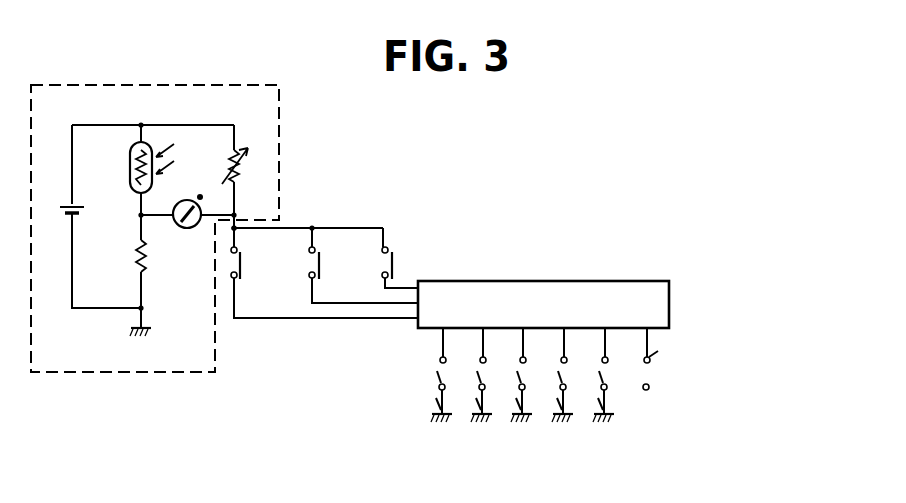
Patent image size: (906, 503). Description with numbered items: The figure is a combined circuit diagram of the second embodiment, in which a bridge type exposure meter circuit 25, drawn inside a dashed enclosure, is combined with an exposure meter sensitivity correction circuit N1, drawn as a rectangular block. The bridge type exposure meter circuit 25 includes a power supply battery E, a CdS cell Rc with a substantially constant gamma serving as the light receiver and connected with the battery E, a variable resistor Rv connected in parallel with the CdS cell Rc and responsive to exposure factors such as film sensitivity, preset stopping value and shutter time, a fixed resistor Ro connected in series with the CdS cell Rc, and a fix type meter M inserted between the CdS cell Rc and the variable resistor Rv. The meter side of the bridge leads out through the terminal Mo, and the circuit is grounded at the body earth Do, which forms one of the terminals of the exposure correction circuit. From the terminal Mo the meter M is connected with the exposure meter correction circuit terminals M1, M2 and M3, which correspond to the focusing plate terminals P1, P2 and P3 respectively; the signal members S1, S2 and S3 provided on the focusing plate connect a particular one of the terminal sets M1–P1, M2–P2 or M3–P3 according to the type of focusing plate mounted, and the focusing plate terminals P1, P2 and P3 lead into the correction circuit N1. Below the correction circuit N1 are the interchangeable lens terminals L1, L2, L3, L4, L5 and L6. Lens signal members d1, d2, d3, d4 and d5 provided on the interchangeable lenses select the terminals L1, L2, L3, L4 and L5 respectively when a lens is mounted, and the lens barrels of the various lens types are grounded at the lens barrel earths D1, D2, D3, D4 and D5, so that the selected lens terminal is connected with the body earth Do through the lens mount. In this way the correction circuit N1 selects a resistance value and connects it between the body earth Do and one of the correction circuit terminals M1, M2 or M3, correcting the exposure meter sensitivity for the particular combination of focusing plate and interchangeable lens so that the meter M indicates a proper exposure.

The bridge type exposure meter circuit 25 is at (279, 137).
The power supply battery E is at (85, 211).
The CdS cell Rc is at (130, 162).
The variable resistor Rv is at (228, 168).
The fixed resistor Ro is at (134, 256).
The fix type meter M is at (187, 228).
The meter terminal Mo is at (237, 227).
The body earth Do is at (152, 324).
The exposure meter correction circuit terminal M1 is at (237, 248).
The signal member S1 is at (241, 262).
The focusing plate terminal P1 is at (237, 278).
The exposure meter correction circuit terminal M2 is at (315, 248).
The signal member S2 is at (320, 262).
The focusing plate terminal P2 is at (315, 278).
The exposure meter correction circuit terminal M3 is at (388, 248).
The signal member S3 is at (393, 260).
The focusing plate terminal P3 is at (388, 278).
The exposure meter sensitivity correction circuit N1 is at (527, 281).
The interchangeable lens terminal L1 is at (456, 345).
The interchangeable lens terminal L2 is at (496, 345).
The interchangeable lens terminal L3 is at (536, 345).
The interchangeable lens terminal L4 is at (577, 345).
The interchangeable lens terminal L5 is at (618, 345).
The interchangeable lens terminal L6 is at (659, 359).
The lens signal member d1 is at (431, 375).
The lens signal member d2 is at (466, 375).
The lens signal member d3 is at (506, 375).
The lens signal member d4 is at (547, 375).
The lens signal member d5 is at (588, 375).
The lens barrel earth D1 is at (432, 406).
The lens barrel earth D2 is at (468, 406).
The lens barrel earth D3 is at (508, 406).
The lens barrel earth D4 is at (549, 406).
The lens barrel earth D5 is at (590, 406).